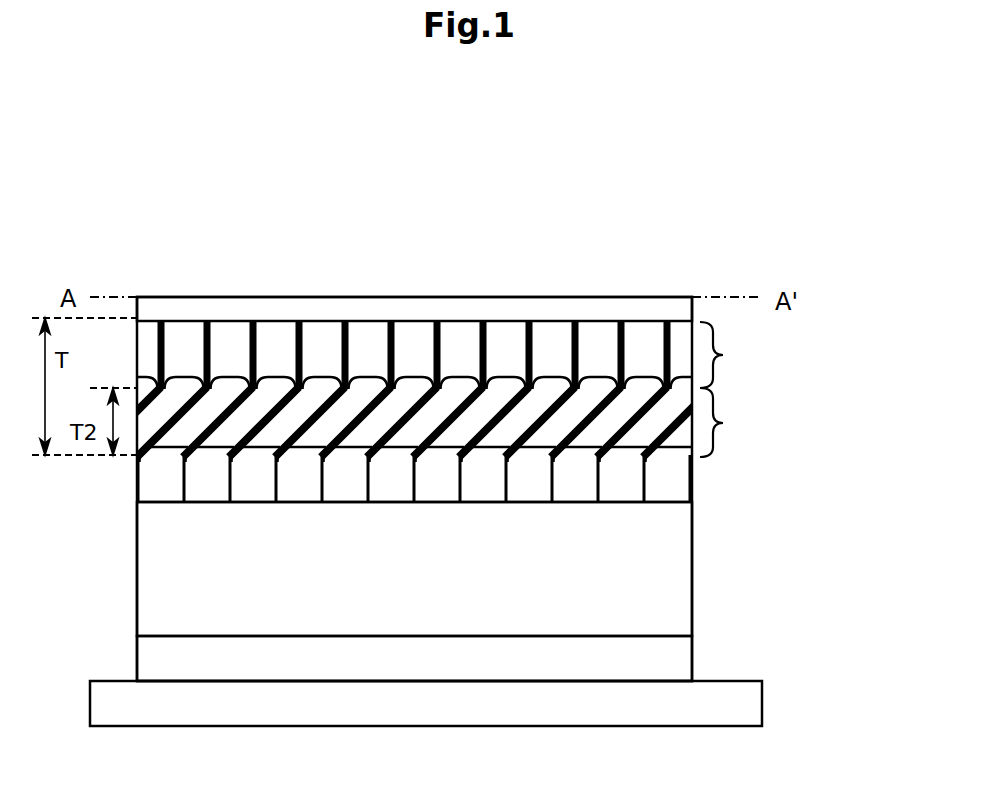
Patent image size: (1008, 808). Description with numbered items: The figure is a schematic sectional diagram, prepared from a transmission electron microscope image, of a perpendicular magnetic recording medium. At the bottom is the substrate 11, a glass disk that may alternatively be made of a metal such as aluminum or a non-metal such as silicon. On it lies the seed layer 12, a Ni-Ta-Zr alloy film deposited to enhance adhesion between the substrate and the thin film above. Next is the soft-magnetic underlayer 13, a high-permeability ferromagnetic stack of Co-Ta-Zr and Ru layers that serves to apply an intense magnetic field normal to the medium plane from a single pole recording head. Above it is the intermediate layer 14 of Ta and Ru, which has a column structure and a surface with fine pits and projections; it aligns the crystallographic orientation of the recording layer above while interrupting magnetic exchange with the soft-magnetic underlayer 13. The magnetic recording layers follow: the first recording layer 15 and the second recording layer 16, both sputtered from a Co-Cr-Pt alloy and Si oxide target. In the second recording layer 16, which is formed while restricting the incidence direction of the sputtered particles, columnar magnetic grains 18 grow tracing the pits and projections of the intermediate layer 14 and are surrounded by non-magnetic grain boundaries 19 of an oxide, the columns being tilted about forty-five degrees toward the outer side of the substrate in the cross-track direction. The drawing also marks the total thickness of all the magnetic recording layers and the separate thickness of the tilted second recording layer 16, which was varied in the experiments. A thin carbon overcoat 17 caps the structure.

The substrate 11 is at (762, 703).
The seed layer 12 is at (692, 660).
The soft-magnetic underlayer 13 is at (692, 571).
The intermediate layer 14 is at (692, 486).
The first recording layer 15 is at (484, 355).
The second recording layer 16 is at (735, 423).
The overcoat 17 is at (625, 297).
The magnetic grains 18 is at (414, 383).
The non-magnetic grain boundaries 19 is at (414, 355).